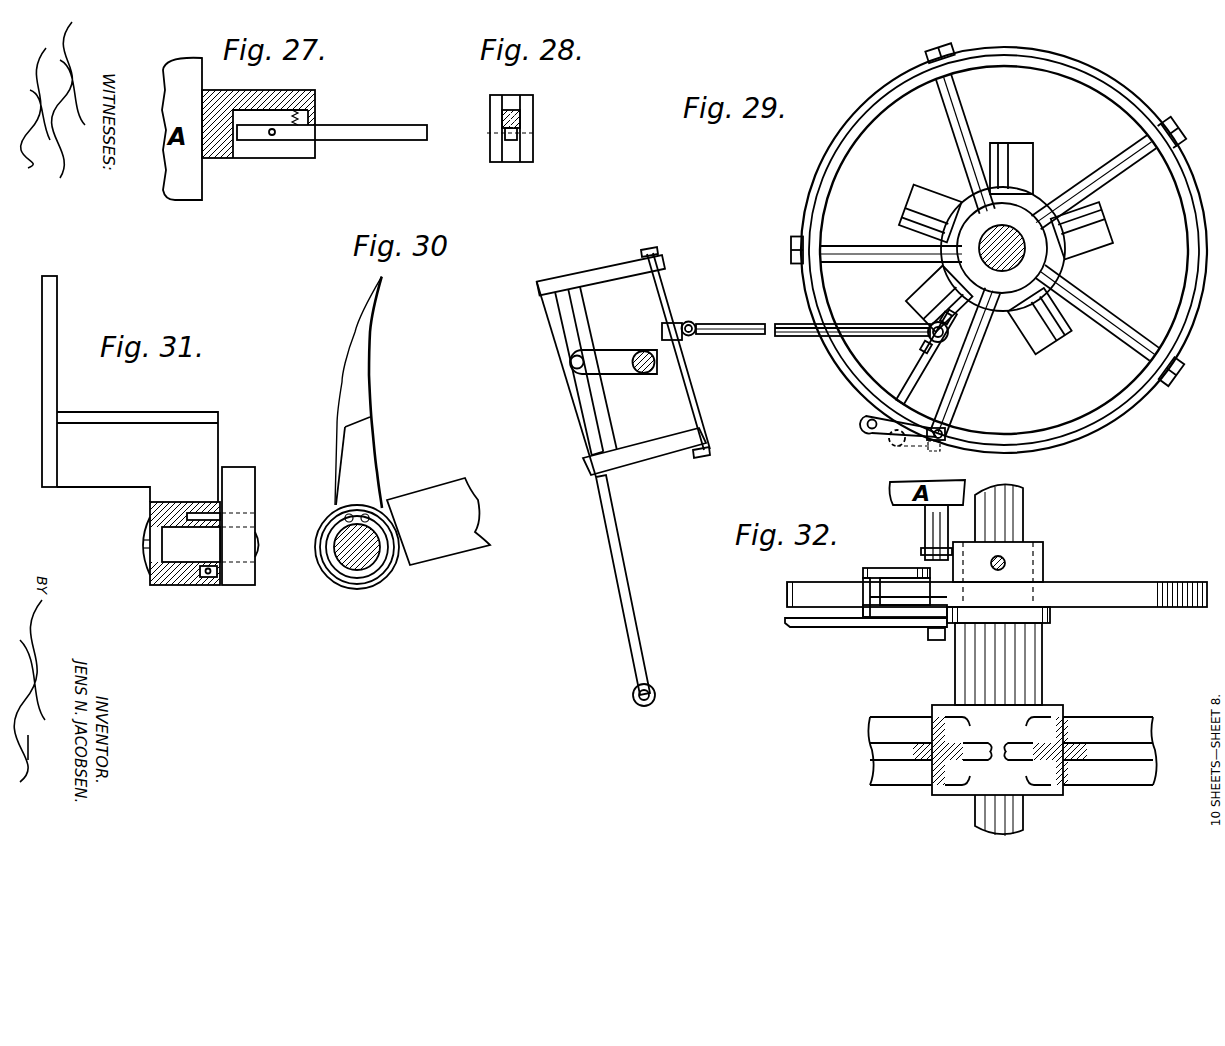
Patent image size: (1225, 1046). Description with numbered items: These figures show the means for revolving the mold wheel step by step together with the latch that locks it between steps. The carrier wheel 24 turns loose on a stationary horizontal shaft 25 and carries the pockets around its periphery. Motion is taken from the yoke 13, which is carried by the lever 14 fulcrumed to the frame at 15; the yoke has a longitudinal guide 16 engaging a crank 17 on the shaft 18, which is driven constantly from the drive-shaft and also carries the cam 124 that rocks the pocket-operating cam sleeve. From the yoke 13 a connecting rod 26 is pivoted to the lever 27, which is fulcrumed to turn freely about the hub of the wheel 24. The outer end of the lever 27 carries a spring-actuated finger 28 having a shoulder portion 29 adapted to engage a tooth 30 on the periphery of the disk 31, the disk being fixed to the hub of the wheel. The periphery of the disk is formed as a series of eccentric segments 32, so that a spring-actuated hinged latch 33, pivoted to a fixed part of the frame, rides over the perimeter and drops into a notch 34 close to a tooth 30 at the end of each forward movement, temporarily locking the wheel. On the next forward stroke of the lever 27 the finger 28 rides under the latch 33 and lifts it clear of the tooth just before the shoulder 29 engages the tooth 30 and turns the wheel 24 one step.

In FIG. 29, the yoke 13 is at (668, 448).
In FIG. 29, the lever 14 is at (621, 538).
In FIG. 29, the fulcrum 15 is at (656, 690).
In FIG. 29, the longitudinal guide 16 is at (587, 308).
In FIG. 29, the crank 17 is at (633, 376).
In FIG. 29, the shaft 18 is at (644, 351).
In FIG. 29, the carrier wheel 24 is at (1025, 172).
In FIG. 32, the carrier wheel 24 is at (1048, 716).
In FIG. 32, the stationary horizontal shaft 25 is at (973, 807).
In FIG. 29, the connecting rod 26 is at (795, 337).
In FIG. 29, the lever 27 is at (918, 368).
In FIG. 30, the lever 27 is at (438, 521).
In FIG. 31, the lever 27 is at (249, 481).
In FIG. 32, the lever 27 is at (842, 623).
In FIG. 29, the spring-actuated finger 28 is at (866, 424).
In FIG. 30, the spring-actuated finger 28 is at (355, 330).
In FIG. 31, the spring-actuated finger 28 is at (42, 360).
In FIG. 32, the spring-actuated finger 28 is at (890, 577).
In FIG. 29, the shoulder portion 29 is at (888, 430).
In FIG. 30, the shoulder portion 29 is at (369, 460).
In FIG. 31, the shoulder portion 29 is at (58, 412).
In FIG. 32, the shoulder portion 29 is at (885, 598).
In FIG. 29, the tooth 30 is at (1174, 136).
In FIG. 29, the disk 31 is at (1122, 104).
In FIG. 32, the disk 31 is at (1092, 590).
In FIG. 29, the eccentric segments 32 is at (1020, 38).
In FIG. 27, the latch 33 is at (358, 140).
In FIG. 28, the latch 33 is at (502, 142).
In FIG. 29, the latch 33 is at (940, 436).
In FIG. 32, the latch 33 is at (937, 525).
In FIG. 29, the notch 34 is at (1170, 128).
In FIG. 29, the cam 124 is at (664, 284).